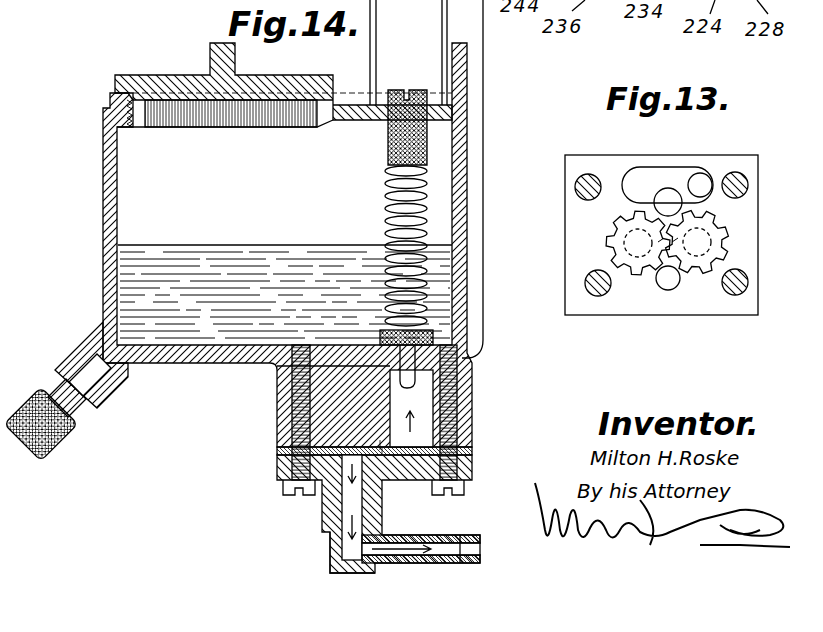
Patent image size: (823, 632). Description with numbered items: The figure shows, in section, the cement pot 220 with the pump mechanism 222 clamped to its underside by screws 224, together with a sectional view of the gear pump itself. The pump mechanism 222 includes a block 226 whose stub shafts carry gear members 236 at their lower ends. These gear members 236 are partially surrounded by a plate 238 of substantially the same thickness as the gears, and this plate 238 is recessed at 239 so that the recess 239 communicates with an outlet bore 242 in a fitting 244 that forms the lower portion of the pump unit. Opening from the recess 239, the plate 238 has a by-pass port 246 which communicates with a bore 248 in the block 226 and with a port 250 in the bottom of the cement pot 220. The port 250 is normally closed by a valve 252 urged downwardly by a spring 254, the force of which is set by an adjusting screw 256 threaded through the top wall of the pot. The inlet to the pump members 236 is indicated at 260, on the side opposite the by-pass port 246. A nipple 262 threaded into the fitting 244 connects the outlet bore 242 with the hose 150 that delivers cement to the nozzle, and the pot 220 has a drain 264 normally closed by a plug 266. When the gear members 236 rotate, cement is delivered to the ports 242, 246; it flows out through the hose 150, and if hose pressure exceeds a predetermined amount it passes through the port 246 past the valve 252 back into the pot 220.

In FIG. 14, the hose 150 is at (468, 563).
In FIG. 14, the cement pot 220 is at (105, 200).
In FIG. 14, the pump mechanism 222 is at (243, 422).
In FIG. 14, the screws 224 is at (283, 494).
In FIG. 13, the screws 224 is at (661, 234).
In FIG. 14, the block 226 is at (473, 420).
In FIG. 13, the gear members 236 is at (680, 268).
In FIG. 14, the plate 238 is at (279, 450).
In FIG. 13, the plate 238 is at (573, 270).
In FIG. 14, the recess 239 is at (382, 452).
In FIG. 13, the recess 239 is at (658, 167).
In FIG. 14, the outlet bore 242 is at (323, 515).
In FIG. 14, the fitting 244 is at (280, 478).
In FIG. 14, the by-pass port 246 is at (437, 444).
In FIG. 13, the by-pass port 246 is at (700, 185).
In FIG. 14, the bore 248 is at (472, 398).
In FIG. 14, the port 250 is at (484, 350).
In FIG. 14, the valve 252 is at (385, 333).
In FIG. 14, the spring 254 is at (388, 193).
In FIG. 14, the adjusting screw 256 is at (418, 90).
In FIG. 13, the inlet 260 is at (670, 283).
In FIG. 14, the nipple 262 is at (345, 569).
In FIG. 14, the drain 264 is at (82, 348).
In FIG. 14, the plug 266 is at (62, 448).